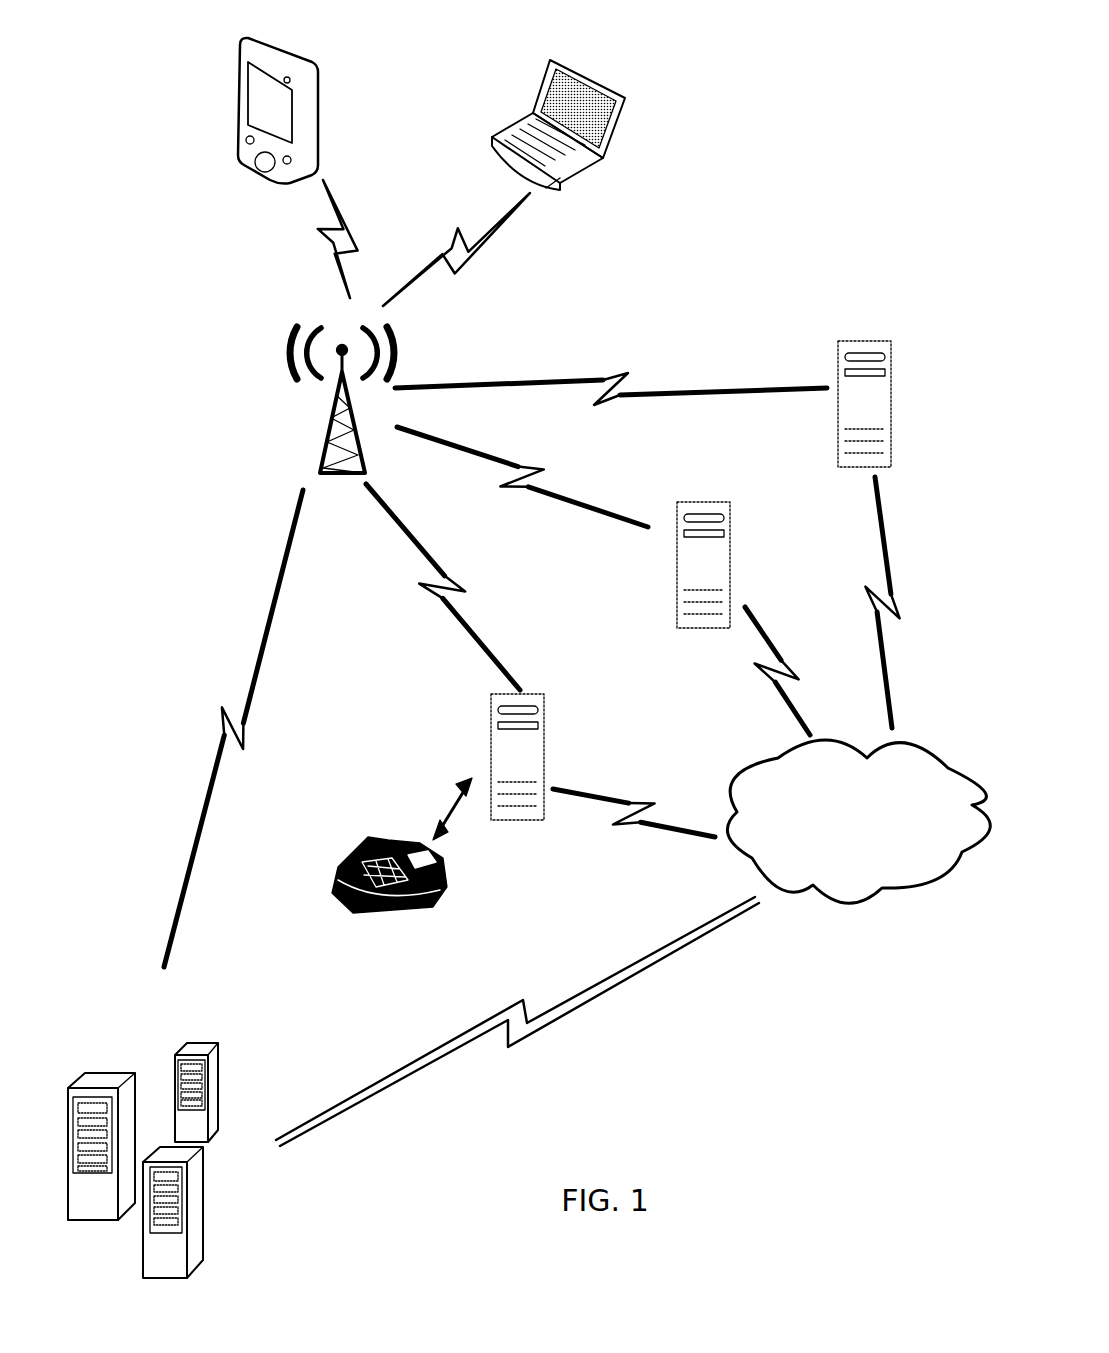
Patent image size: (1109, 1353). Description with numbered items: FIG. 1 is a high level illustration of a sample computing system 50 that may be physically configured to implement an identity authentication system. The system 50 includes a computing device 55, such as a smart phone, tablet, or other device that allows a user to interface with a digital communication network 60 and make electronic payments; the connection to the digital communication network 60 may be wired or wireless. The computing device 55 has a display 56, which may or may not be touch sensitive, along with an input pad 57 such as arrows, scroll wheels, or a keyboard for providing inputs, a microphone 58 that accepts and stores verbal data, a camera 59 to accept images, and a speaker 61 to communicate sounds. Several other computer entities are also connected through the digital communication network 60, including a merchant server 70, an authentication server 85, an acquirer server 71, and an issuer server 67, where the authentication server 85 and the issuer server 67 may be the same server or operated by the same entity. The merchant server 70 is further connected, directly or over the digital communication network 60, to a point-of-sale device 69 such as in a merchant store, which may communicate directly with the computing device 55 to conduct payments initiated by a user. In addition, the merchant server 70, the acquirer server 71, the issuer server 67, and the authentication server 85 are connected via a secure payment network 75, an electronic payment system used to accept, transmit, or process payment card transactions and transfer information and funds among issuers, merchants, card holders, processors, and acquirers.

The computing system 50 is at (182, 347).
The computing device 55 is at (237, 70).
The display 56 is at (260, 102).
The input pad 57 is at (255, 172).
The microphone 58 is at (243, 139).
The camera 59 is at (289, 76).
The speaker 61 is at (287, 166).
The digital communication network 60 is at (288, 425).
The issuer server 67 is at (858, 410).
The point-of-sale device 69 is at (380, 822).
The merchant server 70 is at (528, 760).
The acquirer server 71 is at (695, 572).
The payment network 75 is at (842, 832).
The authentication server 85 is at (213, 1208).